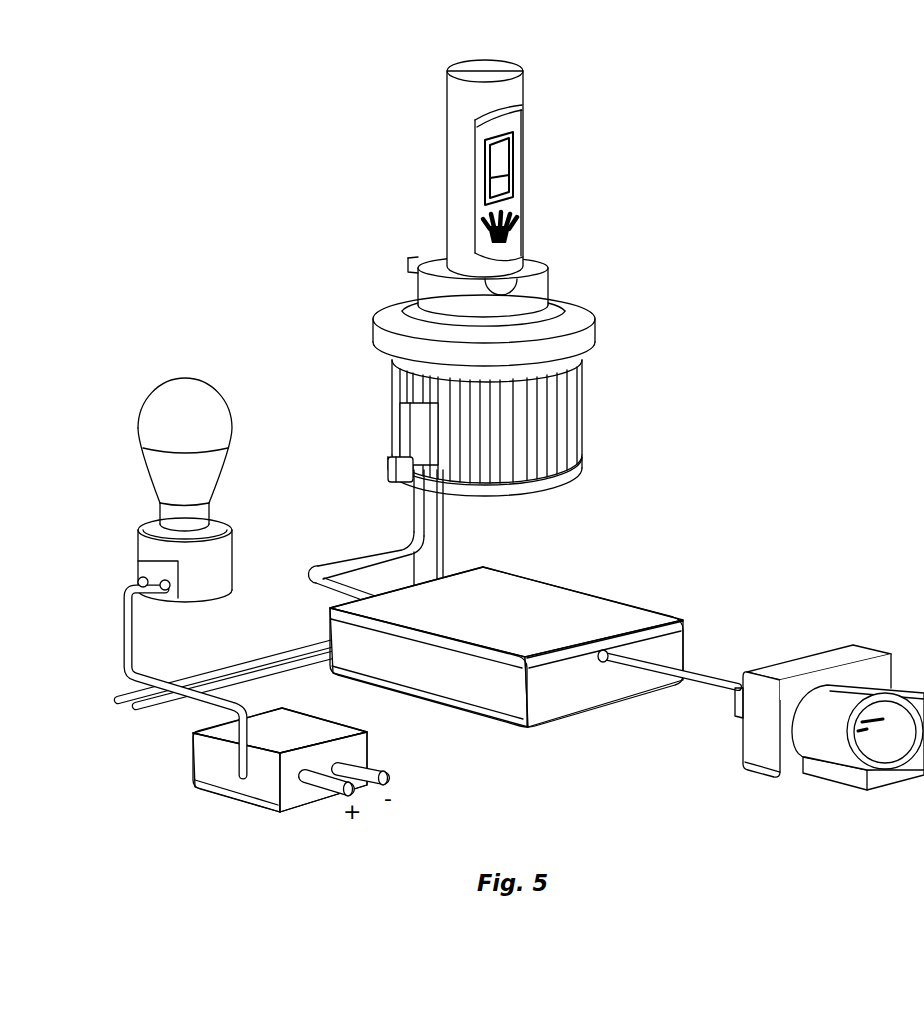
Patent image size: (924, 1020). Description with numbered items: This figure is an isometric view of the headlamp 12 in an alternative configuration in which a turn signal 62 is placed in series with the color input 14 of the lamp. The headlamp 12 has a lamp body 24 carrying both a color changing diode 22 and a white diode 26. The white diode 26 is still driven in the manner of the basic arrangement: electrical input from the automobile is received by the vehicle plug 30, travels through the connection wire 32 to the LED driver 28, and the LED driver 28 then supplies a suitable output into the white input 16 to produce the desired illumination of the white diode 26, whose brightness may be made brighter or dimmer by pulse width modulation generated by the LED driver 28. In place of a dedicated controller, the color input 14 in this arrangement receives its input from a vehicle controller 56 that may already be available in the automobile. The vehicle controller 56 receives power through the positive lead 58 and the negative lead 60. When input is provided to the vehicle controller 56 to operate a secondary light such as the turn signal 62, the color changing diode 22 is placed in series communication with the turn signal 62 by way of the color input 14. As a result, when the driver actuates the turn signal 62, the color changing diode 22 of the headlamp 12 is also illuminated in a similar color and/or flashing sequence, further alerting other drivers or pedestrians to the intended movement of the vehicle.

The headlamp 12 is at (512, 278).
The color input 14 is at (430, 554).
The white input 16 is at (393, 550).
The color changing diode 22 is at (562, 144).
The lamp body 24 is at (477, 168).
The white diode 26 is at (503, 187).
The LED driver 28 is at (607, 613).
The vehicle plug 30 is at (840, 652).
The connection wire 32 is at (706, 683).
The vehicle controller 56 is at (263, 792).
The positive lead 58 is at (333, 785).
The negative lead 60 is at (390, 768).
The turn signal 62 is at (138, 372).